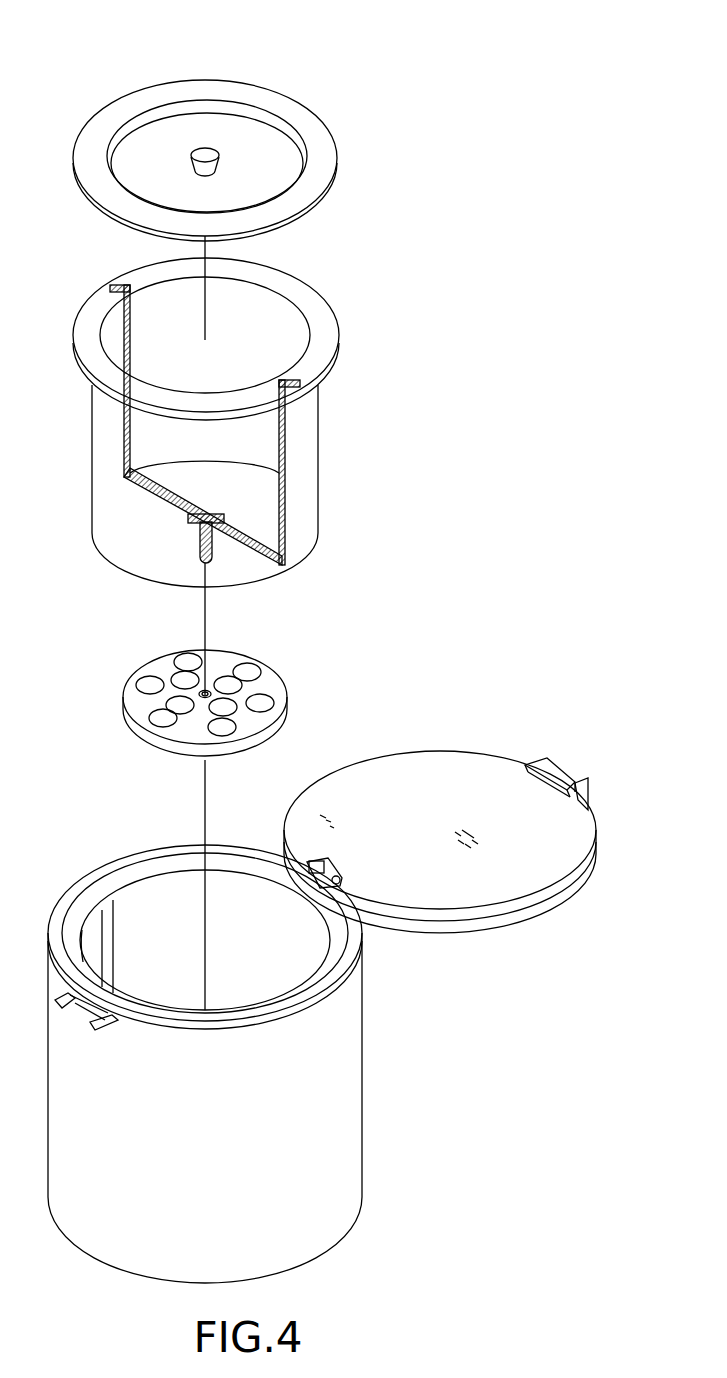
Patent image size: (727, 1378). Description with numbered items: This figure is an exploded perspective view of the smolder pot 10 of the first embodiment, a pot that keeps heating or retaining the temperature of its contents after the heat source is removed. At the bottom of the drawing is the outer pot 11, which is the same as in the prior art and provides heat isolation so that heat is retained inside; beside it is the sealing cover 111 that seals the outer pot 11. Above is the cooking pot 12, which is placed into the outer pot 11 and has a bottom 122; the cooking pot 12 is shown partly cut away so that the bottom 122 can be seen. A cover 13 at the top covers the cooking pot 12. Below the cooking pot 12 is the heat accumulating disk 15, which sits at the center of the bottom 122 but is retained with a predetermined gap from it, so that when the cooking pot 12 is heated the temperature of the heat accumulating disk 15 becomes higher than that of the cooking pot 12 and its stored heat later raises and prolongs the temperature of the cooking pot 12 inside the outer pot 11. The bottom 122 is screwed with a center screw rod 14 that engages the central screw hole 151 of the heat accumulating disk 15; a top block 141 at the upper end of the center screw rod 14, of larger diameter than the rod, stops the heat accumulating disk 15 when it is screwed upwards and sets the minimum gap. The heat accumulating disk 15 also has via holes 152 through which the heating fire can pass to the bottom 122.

The smolder pot 10 is at (200, 52).
The outer pot 11 is at (333, 1017).
The sealing cover 111 is at (513, 872).
The cooking pot 12 is at (229, 422).
The bottom 122 is at (266, 531).
The cover 13 is at (328, 152).
The center screw rod 14 is at (201, 543).
The top block 141 is at (192, 518).
The heat accumulating disk 15 is at (212, 697).
The central screw hole 151 is at (212, 692).
The via holes 152 is at (150, 684).